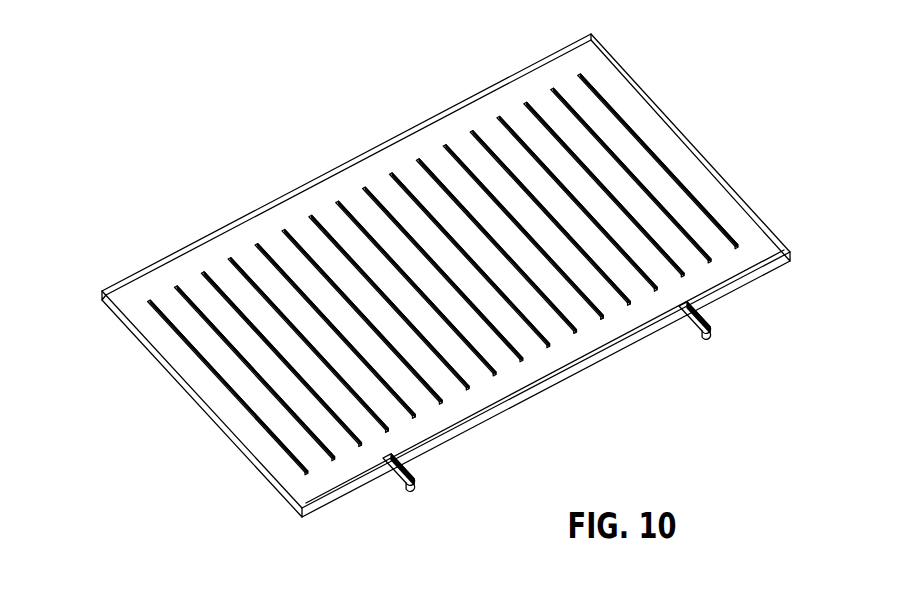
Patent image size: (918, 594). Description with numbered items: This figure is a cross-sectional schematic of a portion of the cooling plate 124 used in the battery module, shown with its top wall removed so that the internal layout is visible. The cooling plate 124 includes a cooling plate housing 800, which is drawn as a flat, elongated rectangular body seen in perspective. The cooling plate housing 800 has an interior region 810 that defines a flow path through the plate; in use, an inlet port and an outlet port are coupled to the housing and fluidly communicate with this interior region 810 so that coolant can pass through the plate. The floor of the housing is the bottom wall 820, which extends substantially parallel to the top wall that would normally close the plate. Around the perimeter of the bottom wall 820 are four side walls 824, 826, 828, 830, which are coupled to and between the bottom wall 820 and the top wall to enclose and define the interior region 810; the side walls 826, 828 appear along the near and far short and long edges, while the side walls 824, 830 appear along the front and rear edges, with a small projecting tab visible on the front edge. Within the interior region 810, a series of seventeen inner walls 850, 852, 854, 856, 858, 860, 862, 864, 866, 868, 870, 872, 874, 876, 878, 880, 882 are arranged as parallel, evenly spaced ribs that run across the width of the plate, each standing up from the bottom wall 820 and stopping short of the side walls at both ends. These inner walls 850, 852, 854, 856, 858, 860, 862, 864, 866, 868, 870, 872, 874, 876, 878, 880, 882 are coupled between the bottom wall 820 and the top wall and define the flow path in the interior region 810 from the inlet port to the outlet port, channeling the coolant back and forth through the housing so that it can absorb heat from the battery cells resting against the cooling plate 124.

The cooling plate 124 is at (765, 91).
The cooling plate housing 800 is at (747, 192).
The interior region 810 is at (613, 92).
The bottom wall 820 is at (683, 163).
The side wall 824 is at (350, 487).
The side wall 826 is at (207, 407).
The side wall 828 is at (110, 283).
The side wall 830 is at (646, 92).
The inner wall 850 is at (149, 301).
The inner wall 852 is at (176, 287).
The inner wall 854 is at (202, 273).
The inner wall 856 is at (229, 259).
The inner wall 858 is at (256, 245).
The inner wall 860 is at (283, 231).
The inner wall 862 is at (310, 217).
The inner wall 864 is at (337, 203).
The inner wall 866 is at (523, 362).
The inner wall 868 is at (550, 348).
The inner wall 870 is at (576, 334).
The inner wall 872 is at (603, 320).
The inner wall 874 is at (630, 306).
The inner wall 876 is at (657, 292).
The inner wall 878 is at (684, 278).
The inner wall 880 is at (711, 264).
The inner wall 882 is at (738, 250).